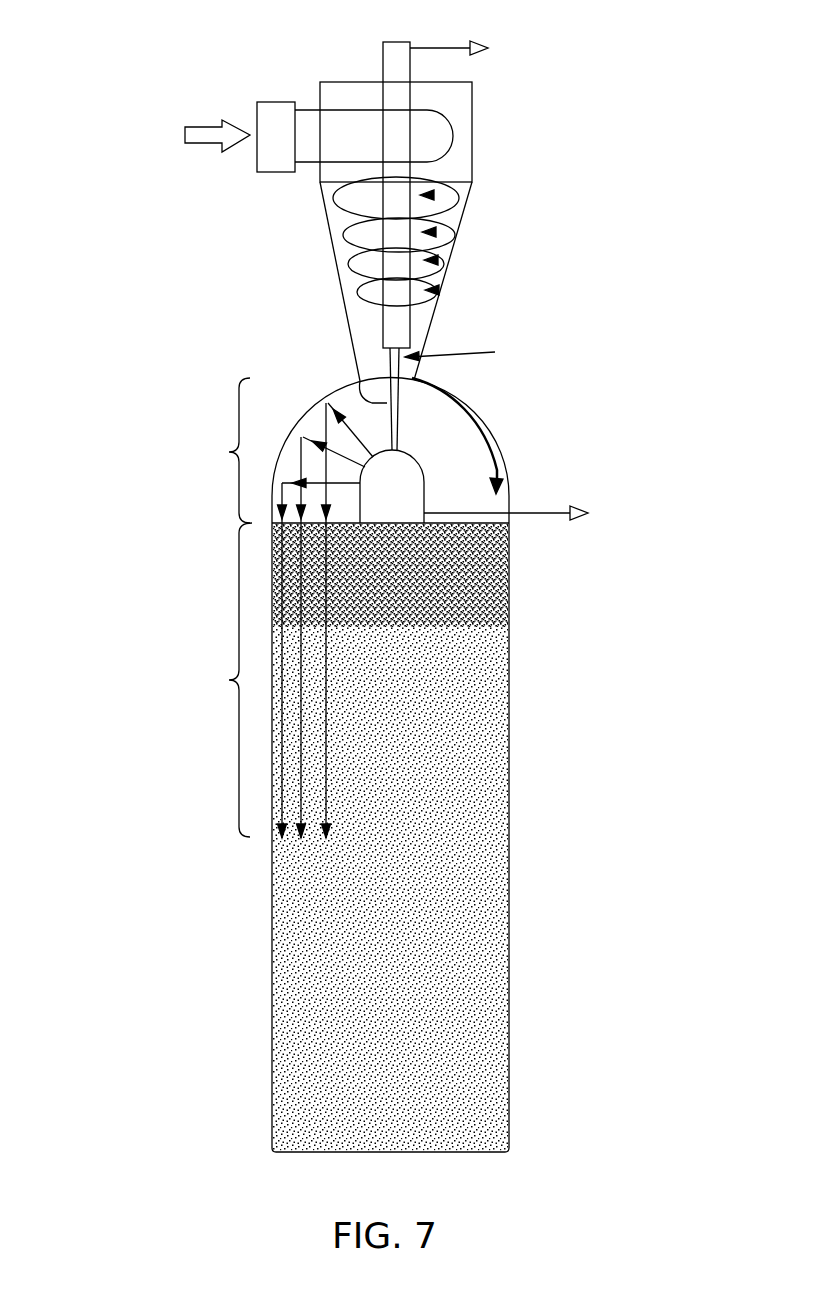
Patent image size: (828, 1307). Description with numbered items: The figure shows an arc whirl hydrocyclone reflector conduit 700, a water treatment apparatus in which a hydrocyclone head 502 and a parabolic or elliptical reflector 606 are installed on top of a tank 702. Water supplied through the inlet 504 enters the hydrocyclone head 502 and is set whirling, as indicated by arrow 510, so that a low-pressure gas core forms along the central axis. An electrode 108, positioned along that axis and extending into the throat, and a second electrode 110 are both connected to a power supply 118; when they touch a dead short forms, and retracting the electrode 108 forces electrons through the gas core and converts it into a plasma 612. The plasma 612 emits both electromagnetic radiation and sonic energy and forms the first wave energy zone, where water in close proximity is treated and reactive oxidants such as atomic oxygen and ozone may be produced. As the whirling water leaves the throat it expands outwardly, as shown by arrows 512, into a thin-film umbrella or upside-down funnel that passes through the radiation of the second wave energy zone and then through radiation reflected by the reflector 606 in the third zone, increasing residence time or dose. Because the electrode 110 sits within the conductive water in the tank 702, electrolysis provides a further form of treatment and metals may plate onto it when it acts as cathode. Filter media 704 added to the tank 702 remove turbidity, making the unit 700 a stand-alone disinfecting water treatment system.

The arc whirl hydrocyclone reflector conduit 700 is at (560, 92).
The electrode 108 is at (383, 57).
The power supply 118 is at (559, 268).
The hydrocyclone head 502 is at (380, 147).
The input / inlet 504 is at (185, 133).
The arrow showing whirling water 510 is at (463, 220).
The reflector 606 is at (358, 373).
The plasma 612 is at (387, 403).
The arrows showing outward expansion 512 is at (500, 455).
The electrode 110 is at (372, 503).
The tank 702 is at (481, 764).
The filter media 704 is at (480, 569).